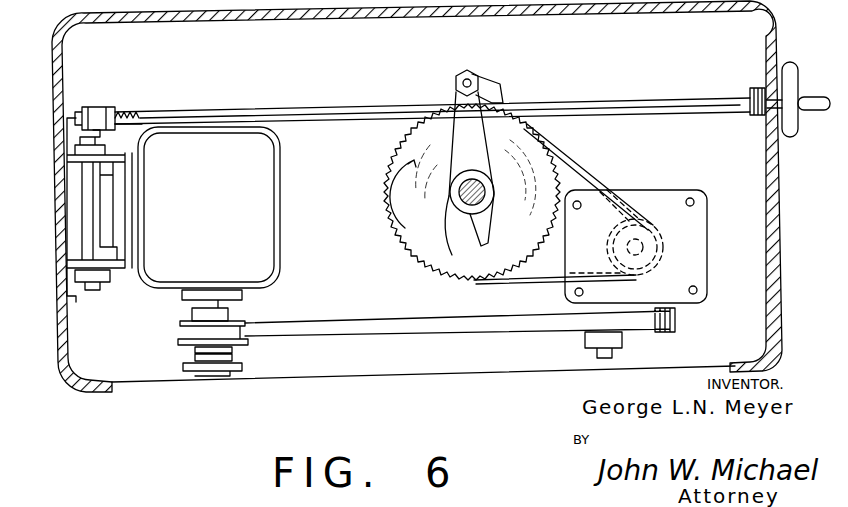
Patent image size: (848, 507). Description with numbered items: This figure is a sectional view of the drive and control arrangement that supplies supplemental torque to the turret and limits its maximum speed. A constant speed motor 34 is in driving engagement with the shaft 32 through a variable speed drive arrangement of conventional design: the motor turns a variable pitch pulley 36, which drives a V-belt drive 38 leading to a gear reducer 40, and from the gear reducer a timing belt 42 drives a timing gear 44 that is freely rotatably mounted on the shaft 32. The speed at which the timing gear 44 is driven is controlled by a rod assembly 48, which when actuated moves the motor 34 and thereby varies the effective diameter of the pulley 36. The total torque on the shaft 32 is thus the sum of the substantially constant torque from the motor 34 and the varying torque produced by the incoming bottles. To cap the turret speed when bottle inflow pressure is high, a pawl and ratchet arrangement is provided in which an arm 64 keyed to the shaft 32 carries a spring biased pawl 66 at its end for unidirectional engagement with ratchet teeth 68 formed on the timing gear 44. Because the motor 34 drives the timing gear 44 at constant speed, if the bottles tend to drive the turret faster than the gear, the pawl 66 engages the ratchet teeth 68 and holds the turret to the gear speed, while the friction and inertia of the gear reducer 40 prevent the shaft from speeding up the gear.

The shaft 32 is at (481, 207).
The constant speed motor 34 is at (215, 211).
The variable pitch pulley 36 is at (185, 321).
The V-belt drive 38 is at (349, 323).
The gear reducer 40 is at (662, 208).
The timing belt 42 is at (578, 166).
The timing gear 44 is at (440, 252).
The rod assembly 48 is at (300, 110).
The arm 64 is at (465, 130).
The spring biased pawl 66 is at (490, 88).
The ratchet teeth 68 is at (385, 223).